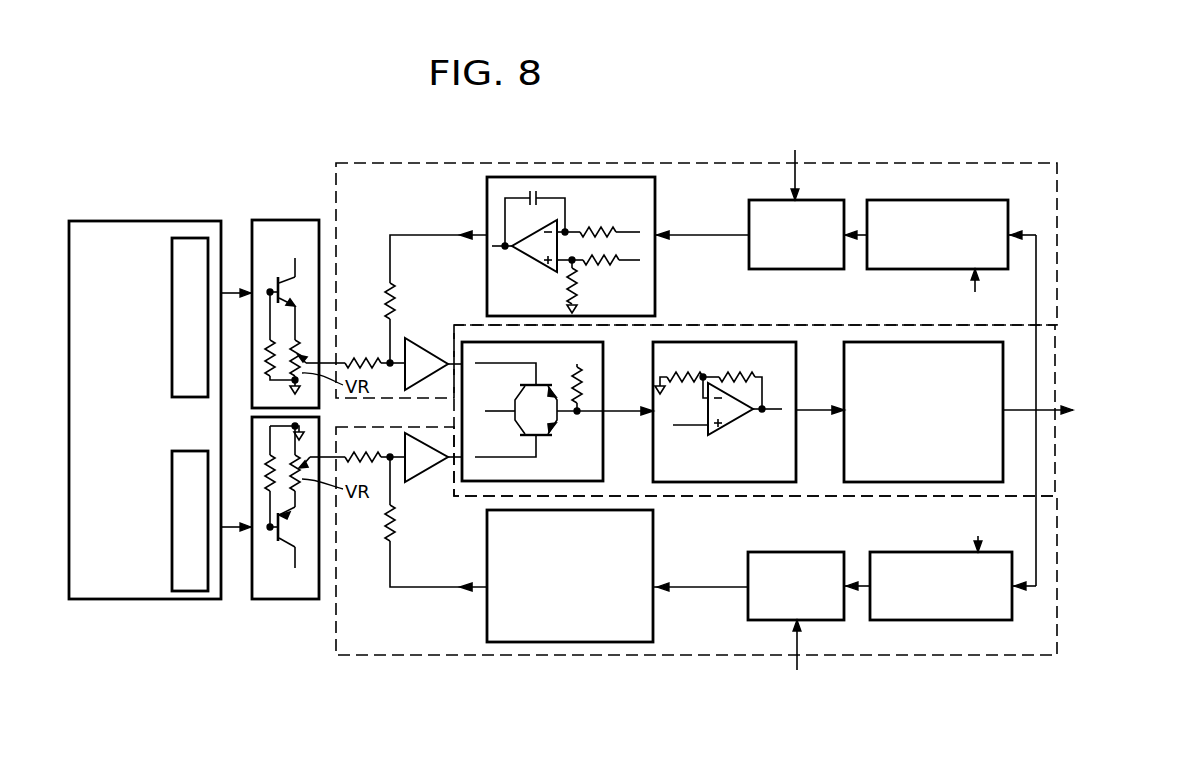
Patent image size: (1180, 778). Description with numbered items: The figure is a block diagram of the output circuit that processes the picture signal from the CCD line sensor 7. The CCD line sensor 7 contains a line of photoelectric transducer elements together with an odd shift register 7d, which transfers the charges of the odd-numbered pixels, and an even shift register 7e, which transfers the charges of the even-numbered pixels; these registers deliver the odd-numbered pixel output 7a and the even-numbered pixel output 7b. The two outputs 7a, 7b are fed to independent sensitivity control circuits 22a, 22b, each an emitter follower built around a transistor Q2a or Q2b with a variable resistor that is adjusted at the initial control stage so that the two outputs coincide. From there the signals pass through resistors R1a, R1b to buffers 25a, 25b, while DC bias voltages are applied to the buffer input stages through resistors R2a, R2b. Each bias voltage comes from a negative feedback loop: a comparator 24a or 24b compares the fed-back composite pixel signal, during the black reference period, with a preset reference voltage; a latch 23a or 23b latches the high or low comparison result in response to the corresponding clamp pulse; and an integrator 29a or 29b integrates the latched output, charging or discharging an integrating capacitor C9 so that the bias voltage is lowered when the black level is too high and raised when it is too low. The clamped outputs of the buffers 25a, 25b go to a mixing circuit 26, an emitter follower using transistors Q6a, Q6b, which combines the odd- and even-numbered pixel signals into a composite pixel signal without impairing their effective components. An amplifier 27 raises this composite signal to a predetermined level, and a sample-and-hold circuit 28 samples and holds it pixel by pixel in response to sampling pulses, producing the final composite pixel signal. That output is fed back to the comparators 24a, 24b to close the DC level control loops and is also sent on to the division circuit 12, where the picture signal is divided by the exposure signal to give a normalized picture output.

The CCD line sensor 7 is at (194, 221).
The odd shift register 7d is at (172, 272).
The even shift register 7e is at (195, 451).
The odd-numbered pixel output 7a is at (236, 309).
The even-numbered pixel output 7b is at (236, 541).
The sensitivity control circuit 22a is at (276, 220).
The sensitivity control circuit 22b is at (283, 600).
The transistor Q2a is at (293, 294).
The transistor Q2b is at (293, 526).
The resistor R1a is at (362, 350).
The resistor R1b is at (362, 444).
The resistor R2a is at (394, 304).
The resistor R2b is at (395, 531).
The buffer 25a is at (420, 352).
The buffer 25b is at (418, 470).
The integrator 29a is at (487, 200).
The integrator 29b is at (487, 616).
The integrating capacitor C9 is at (548, 198).
The latch 23a is at (749, 206).
The latch 23b is at (748, 614).
The comparator 24a is at (876, 200).
The comparator 24b is at (965, 620).
The mixing circuit 26 is at (603, 462).
The transistor Q6a is at (521, 384).
The transistor Q6b is at (542, 438).
The amplifier 27 is at (796, 462).
The sample-and-hold circuit 28 is at (1003, 462).
The division circuit 12 is at (1113, 432).